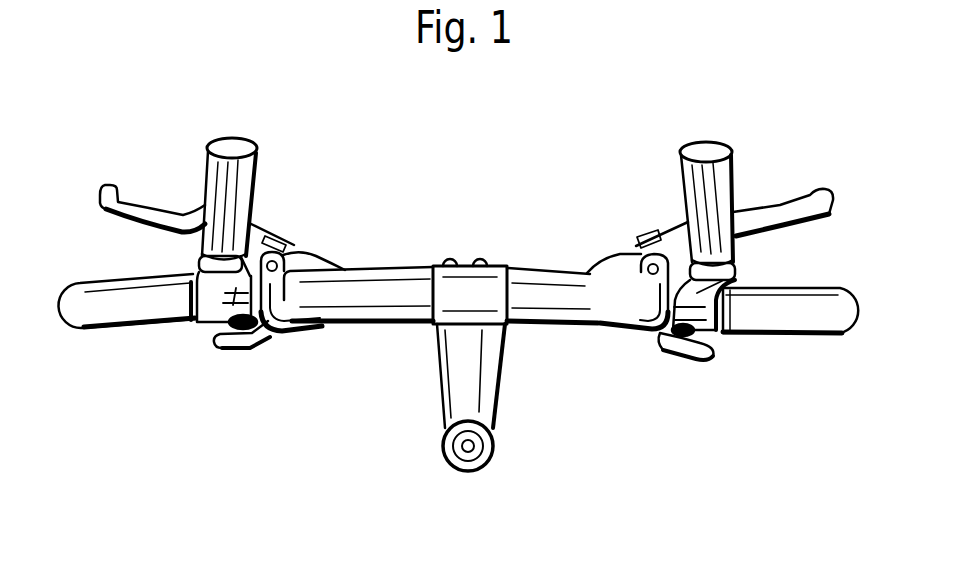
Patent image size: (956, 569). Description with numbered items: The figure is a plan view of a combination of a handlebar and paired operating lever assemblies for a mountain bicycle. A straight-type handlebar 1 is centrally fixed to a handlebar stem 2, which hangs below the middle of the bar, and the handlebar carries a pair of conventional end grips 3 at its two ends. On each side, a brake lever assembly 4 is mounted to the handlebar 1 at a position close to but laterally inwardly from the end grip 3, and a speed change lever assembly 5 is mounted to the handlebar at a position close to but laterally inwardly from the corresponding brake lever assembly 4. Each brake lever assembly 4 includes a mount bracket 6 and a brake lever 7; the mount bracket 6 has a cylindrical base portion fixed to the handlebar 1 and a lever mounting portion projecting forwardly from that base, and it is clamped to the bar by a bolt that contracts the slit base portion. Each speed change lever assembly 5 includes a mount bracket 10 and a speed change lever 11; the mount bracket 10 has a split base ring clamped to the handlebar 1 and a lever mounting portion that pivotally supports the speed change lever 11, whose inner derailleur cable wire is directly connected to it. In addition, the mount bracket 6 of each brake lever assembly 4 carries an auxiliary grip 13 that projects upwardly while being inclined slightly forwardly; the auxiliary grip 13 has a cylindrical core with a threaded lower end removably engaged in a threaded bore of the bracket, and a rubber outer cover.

The handlebar 1 is at (547, 268).
The handlebar stem 2 is at (494, 444).
The end grip 3 is at (120, 333).
The brake lever assembly 4 is at (272, 214).
The speed change lever assembly 5 is at (290, 346).
The mount bracket 6 is at (225, 315).
The brake lever 7 is at (130, 204).
The mount bracket 10 is at (300, 257).
The speed change lever 11 is at (250, 355).
The auxiliary grip 13 is at (257, 180).